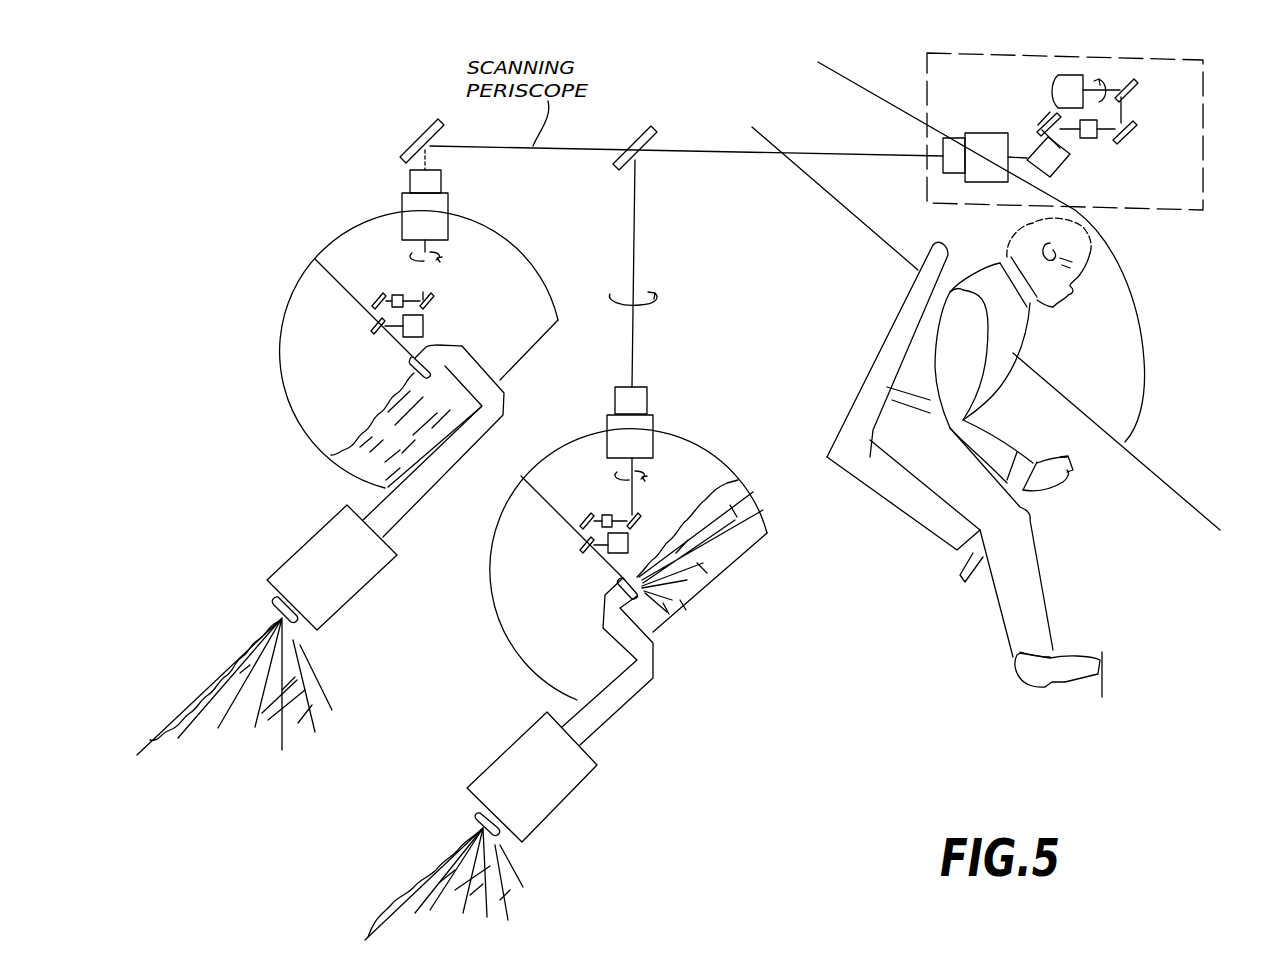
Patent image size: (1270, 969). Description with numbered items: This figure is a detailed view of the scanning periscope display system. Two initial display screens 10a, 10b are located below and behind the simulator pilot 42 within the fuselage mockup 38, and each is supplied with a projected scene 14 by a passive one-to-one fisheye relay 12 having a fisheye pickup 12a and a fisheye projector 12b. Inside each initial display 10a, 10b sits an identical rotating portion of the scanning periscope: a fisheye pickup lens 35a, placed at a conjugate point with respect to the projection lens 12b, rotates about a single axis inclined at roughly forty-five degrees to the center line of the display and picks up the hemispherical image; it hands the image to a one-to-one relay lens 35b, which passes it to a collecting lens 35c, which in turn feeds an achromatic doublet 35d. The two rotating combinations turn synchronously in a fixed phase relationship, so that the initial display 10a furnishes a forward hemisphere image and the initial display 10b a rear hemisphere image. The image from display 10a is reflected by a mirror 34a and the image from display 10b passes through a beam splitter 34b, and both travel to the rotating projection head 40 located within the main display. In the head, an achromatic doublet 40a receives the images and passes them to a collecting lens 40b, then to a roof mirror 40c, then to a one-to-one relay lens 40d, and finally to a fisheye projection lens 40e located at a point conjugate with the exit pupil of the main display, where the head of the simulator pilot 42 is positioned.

The initial display screen 10a is at (507, 233).
The initial display screen 10b is at (715, 458).
The fisheye relay 12 is at (306, 547).
The fisheye pickup 12a is at (279, 602).
The fisheye projector 12b is at (412, 372).
The scene 14 is at (180, 685).
The mirror 34a is at (420, 126).
The beam splitter 34b is at (633, 147).
The fisheye pickup lens 35a is at (426, 323).
The relay lens 35b is at (397, 295).
The collecting lens 35c is at (402, 216).
The achromatic doublet 35d is at (408, 177).
The fuselage mockup 38 is at (1143, 332).
The rotating projection head 40 is at (927, 62).
The achromatic doublet 40a is at (949, 138).
The collecting lens 40b is at (1003, 115).
The roof mirror 40c is at (1058, 167).
The relay lens 40d is at (1088, 138).
The fisheye projection lens 40e is at (1063, 75).
The simulator pilot 42 is at (1020, 350).